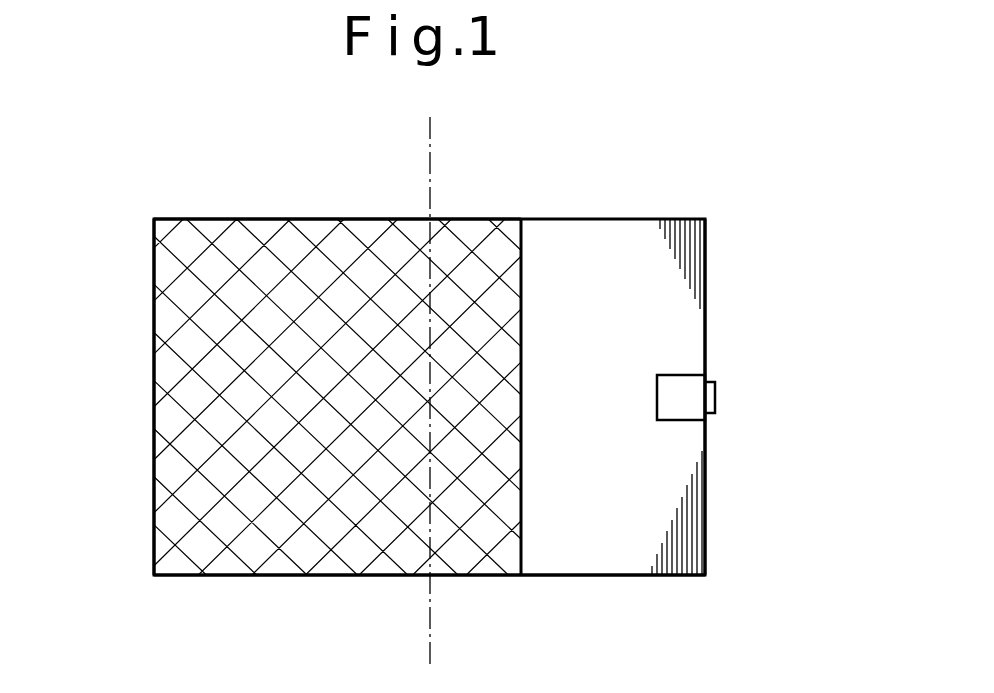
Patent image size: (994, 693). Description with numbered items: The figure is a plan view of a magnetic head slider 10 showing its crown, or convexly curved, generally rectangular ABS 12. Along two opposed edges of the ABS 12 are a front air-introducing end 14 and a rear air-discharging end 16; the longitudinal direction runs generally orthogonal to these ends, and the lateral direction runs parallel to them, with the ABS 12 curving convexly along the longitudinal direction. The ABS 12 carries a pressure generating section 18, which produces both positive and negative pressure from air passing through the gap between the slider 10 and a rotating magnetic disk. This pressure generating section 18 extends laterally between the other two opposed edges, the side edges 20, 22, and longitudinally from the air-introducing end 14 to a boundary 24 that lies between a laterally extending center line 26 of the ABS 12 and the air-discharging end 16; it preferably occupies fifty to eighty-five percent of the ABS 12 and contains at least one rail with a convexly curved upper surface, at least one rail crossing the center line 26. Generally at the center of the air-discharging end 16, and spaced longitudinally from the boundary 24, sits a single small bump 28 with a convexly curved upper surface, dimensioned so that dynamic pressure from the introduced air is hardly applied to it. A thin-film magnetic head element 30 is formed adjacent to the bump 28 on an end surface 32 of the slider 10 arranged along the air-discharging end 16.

The magnetic head slider 10 is at (503, 188).
The ABS 12 is at (252, 256).
The air-introducing end 14 is at (154, 364).
The air-discharging end 16 is at (705, 279).
The pressure generating section 18 is at (257, 539).
The side edge 20 is at (332, 219).
The side edge 22 is at (315, 577).
The boundary 24 is at (521, 460).
The center line 26 is at (431, 632).
The bump 28 is at (680, 396).
The thin-film magnetic head element 30 is at (716, 397).
The end surface 32 is at (705, 520).